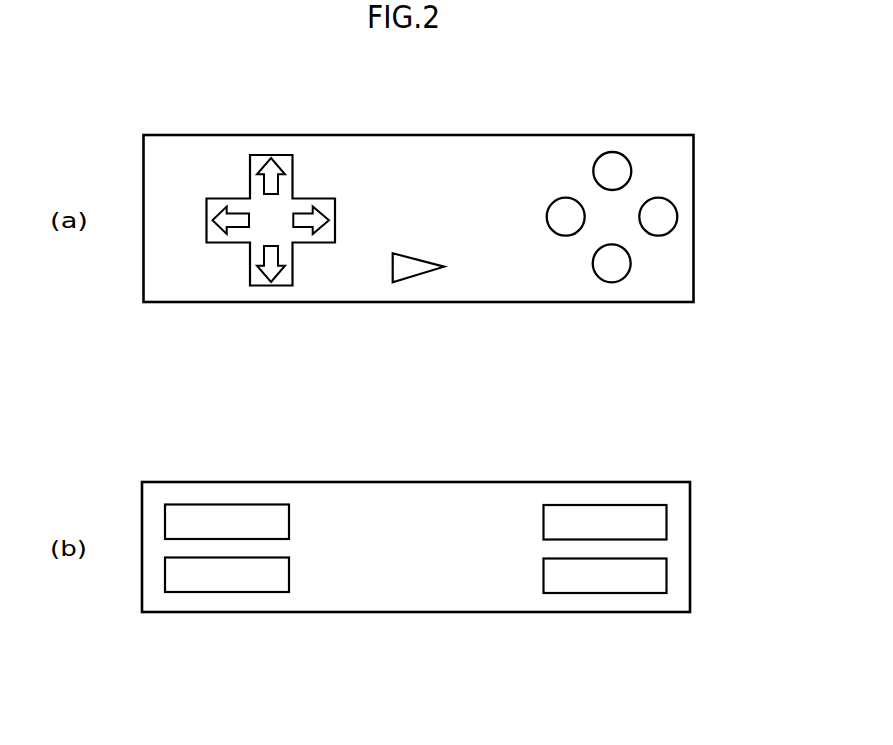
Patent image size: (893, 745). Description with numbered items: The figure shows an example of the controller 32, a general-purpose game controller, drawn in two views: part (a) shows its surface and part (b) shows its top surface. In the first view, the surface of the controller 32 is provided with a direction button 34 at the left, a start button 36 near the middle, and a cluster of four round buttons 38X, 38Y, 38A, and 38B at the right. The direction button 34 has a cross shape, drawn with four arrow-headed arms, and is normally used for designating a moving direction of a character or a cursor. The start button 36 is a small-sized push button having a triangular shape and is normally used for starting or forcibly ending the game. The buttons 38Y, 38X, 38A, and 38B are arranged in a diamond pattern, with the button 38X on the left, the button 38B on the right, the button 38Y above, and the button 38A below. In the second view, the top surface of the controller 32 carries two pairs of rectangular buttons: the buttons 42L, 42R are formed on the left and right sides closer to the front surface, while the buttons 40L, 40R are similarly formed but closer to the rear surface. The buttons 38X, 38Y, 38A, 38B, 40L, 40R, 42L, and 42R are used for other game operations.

The controller 32 is at (194, 134).
The direction button 34 is at (293, 174).
The start button 36 is at (420, 274).
The button 38Y is at (591, 172).
The button 38X is at (546, 219).
The button 38A is at (591, 266).
The button 38B is at (678, 217).
The button 40L is at (227, 503).
The button 42L is at (230, 592).
The button 40R is at (628, 482).
The button 42R is at (606, 593).